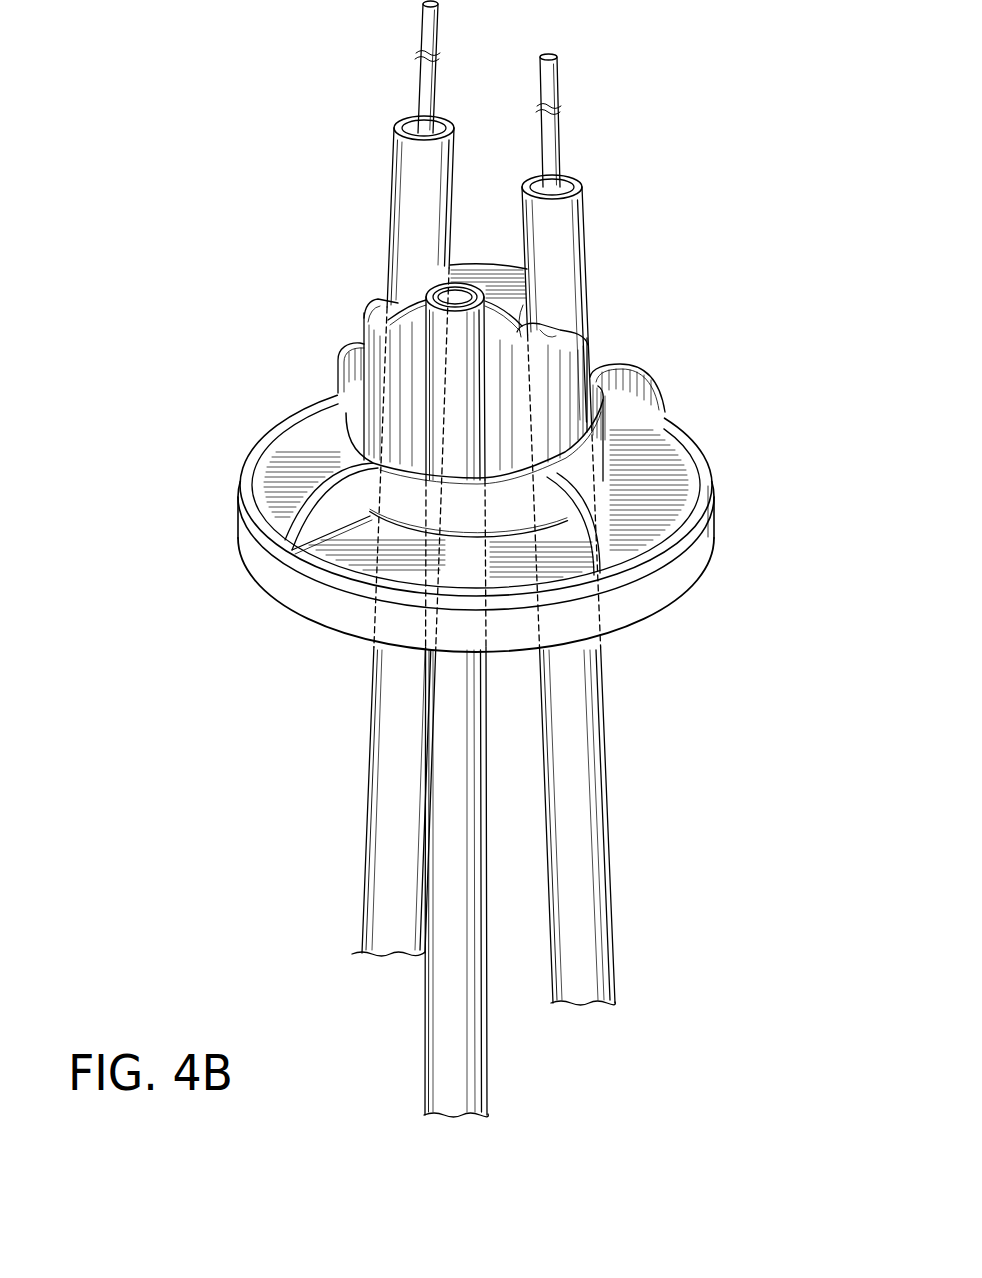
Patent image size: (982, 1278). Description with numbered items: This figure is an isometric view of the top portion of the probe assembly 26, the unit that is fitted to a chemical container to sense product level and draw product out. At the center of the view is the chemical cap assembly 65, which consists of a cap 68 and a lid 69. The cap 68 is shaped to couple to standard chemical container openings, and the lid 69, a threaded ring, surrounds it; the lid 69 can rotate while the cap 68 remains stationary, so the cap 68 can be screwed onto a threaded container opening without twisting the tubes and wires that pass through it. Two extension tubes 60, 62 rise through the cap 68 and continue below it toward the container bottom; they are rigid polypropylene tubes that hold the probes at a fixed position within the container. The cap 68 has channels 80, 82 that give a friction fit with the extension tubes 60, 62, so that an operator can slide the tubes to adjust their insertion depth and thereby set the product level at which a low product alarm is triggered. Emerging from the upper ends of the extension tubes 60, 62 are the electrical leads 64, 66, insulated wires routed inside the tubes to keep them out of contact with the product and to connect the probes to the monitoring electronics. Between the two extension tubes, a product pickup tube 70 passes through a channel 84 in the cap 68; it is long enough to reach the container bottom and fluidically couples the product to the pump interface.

The probe assembly 26 is at (532, 560).
The extension tube 60 is at (394, 161).
The extension tube 62 is at (585, 227).
The electrical lead 64 is at (422, 68).
The electrical lead 66 is at (557, 83).
The chemical cap assembly 65 is at (697, 427).
The cap 68 is at (356, 310).
The lid 69 is at (708, 562).
The product pickup tube 70 is at (462, 290).
The channel 80 is at (395, 310).
The channel 82 is at (555, 330).
The channel 84 is at (415, 410).